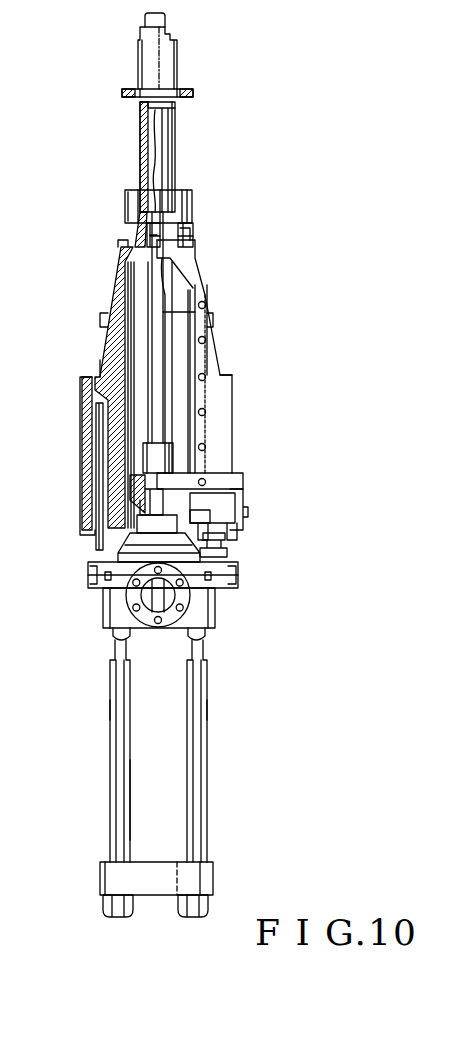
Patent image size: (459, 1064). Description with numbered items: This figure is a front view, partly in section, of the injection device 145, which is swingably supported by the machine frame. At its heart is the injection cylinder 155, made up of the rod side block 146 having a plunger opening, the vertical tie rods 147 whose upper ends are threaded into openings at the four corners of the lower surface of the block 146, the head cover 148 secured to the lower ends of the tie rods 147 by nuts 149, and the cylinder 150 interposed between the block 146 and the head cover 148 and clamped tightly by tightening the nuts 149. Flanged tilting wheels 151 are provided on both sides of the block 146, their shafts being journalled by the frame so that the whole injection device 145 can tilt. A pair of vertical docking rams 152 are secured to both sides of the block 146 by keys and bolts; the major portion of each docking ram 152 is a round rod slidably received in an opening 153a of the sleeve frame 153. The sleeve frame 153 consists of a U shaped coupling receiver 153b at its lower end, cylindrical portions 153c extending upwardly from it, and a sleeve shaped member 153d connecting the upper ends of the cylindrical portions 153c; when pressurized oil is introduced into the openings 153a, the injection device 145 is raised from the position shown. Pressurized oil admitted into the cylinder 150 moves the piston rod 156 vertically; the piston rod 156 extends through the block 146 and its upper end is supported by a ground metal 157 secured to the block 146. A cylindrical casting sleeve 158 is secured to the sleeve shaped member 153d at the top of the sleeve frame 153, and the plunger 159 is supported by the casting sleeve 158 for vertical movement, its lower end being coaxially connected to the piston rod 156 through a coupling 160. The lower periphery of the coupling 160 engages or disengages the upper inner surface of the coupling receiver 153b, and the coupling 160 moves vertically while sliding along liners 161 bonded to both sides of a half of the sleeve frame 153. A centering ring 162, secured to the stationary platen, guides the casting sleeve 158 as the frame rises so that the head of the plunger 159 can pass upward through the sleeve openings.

The injection device 145 is at (214, 268).
The rod side block 146 is at (216, 624).
The vertical tie rods 147 is at (116, 730).
The head cover 148 is at (214, 878).
The nuts 149 is at (106, 904).
The cylinder 150 is at (168, 800).
The flanged tilting wheels 151 is at (128, 598).
The vertical docking rams 152 is at (95, 464).
The sleeve frame 153 is at (106, 275).
The opening 153a is at (95, 428).
The U shaped coupling receiver 153b is at (226, 506).
The cylindrical portions 153c is at (104, 360).
The sleeve shaped member 153d is at (128, 210).
The injection cylinder 155 is at (212, 698).
The piston rod 156 is at (118, 497).
The ground metal 157 is at (228, 560).
The cylindrical casting sleeve 158 is at (140, 139).
The plunger 159 is at (195, 312).
The coupling 160 is at (186, 478).
The liners 161 is at (200, 396).
The centering ring 162 is at (196, 92).